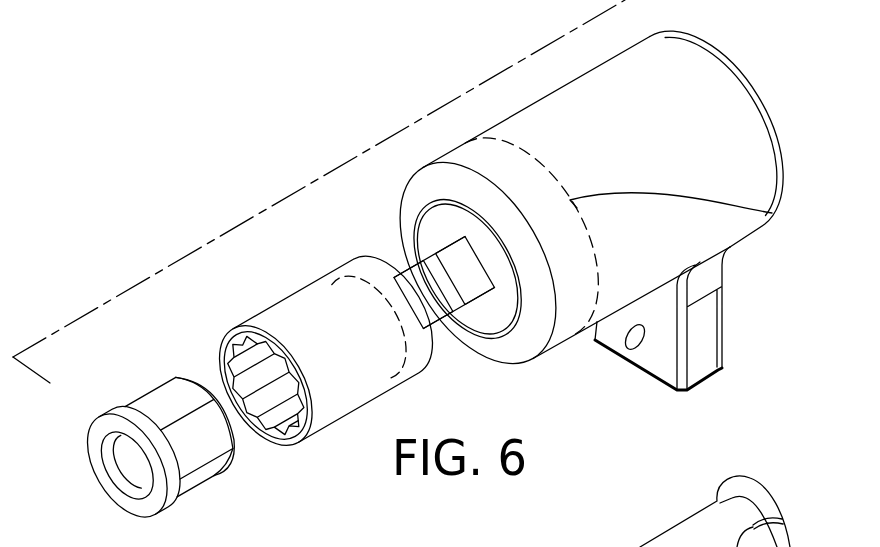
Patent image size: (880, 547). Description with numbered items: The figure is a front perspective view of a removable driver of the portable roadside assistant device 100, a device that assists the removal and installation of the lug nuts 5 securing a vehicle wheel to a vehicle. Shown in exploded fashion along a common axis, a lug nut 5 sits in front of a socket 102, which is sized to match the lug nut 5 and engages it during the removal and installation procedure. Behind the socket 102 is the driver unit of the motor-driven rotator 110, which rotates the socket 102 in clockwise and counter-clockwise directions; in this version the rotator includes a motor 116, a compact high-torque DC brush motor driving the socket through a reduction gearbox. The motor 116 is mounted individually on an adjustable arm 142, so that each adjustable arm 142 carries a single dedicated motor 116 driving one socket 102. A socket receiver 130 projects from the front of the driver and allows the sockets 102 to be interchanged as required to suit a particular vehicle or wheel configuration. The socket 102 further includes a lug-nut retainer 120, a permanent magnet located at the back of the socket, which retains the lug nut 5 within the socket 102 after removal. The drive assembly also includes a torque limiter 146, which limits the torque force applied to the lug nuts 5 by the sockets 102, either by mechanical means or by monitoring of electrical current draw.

The lug nut 5 is at (113, 501).
The portable roadside assistant device 100 is at (760, 469).
The socket 102 is at (229, 342).
The motor-driven rotator 110 is at (693, 160).
The motor 116 is at (748, 115).
The lug-nut retainer 120 is at (320, 302).
The socket receiver 130 is at (453, 258).
The adjustable arm 142 is at (718, 316).
The torque limiter 146 is at (767, 212).